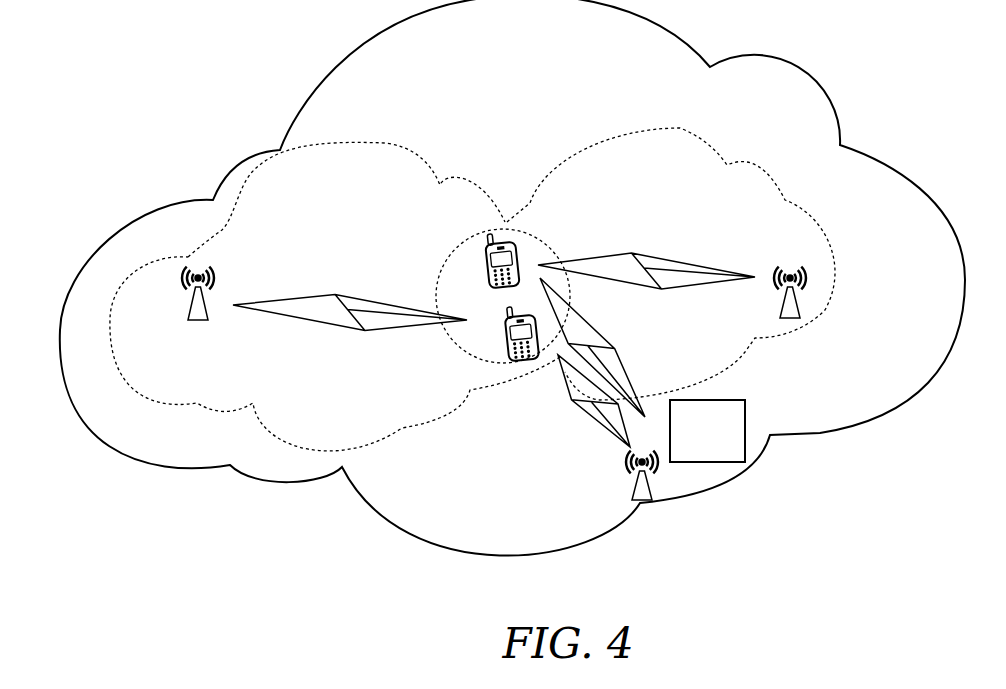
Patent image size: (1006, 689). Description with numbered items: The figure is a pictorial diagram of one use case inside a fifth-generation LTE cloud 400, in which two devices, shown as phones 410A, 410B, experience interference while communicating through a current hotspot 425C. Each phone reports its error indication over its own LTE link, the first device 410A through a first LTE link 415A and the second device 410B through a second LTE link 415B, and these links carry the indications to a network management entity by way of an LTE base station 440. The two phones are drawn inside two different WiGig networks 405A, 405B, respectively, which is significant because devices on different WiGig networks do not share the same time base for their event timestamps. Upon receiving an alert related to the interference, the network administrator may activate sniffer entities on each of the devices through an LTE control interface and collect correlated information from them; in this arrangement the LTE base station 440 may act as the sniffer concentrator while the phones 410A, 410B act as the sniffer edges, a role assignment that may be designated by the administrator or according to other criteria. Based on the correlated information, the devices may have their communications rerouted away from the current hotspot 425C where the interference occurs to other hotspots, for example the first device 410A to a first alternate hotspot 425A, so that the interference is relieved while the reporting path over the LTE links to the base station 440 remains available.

The 5G LTE cloud 400 is at (676, 38).
The first WiGig network 405A is at (385, 143).
The second WiGig network 405B is at (697, 135).
The first device 410A is at (515, 253).
The second device 410B is at (540, 323).
The first LTE link 415A is at (608, 368).
The second LTE link 415B is at (578, 410).
The first alternate hotspot 425A is at (217, 270).
The current hotspot 425C is at (808, 267).
The LTE base station 440 is at (745, 418).